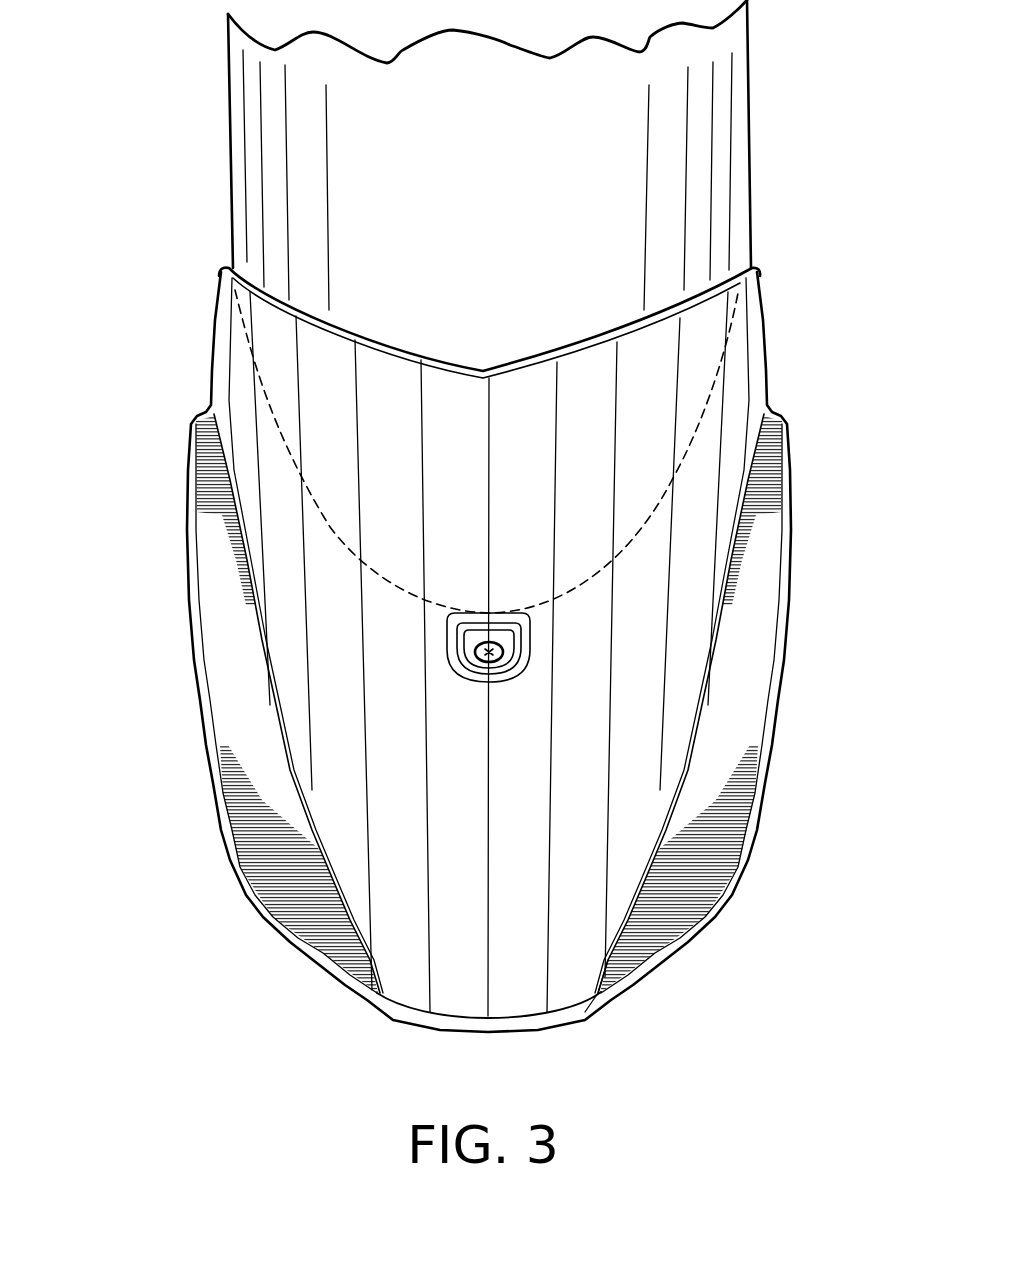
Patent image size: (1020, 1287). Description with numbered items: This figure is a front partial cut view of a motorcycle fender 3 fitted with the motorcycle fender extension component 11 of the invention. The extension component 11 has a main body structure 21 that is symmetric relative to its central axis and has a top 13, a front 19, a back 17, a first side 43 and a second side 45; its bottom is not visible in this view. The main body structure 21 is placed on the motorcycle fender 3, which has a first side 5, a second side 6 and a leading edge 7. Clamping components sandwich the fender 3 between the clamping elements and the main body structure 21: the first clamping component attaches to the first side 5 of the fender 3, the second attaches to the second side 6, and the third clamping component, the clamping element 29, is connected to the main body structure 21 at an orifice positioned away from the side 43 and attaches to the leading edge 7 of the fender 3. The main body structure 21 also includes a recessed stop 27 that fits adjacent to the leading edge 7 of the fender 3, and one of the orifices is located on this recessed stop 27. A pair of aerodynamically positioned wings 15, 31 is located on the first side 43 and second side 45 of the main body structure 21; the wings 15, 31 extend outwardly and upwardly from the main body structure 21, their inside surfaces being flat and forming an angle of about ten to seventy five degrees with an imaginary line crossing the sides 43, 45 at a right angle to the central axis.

The motorcycle fender 3 is at (165, 170).
The first side of the motorcycle fender 5 is at (748, 210).
The second side of the motorcycle fender 6 is at (228, 107).
The leading edge of the motorcycle fender 7 is at (474, 602).
The motorcycle fender extension component 11 is at (808, 607).
The top 13 is at (467, 877).
The wing 15 is at (740, 733).
The back 17 is at (623, 340).
The front 19 is at (420, 1027).
The main body structure 21 is at (582, 985).
The recessed stop 27 is at (457, 647).
The clamping element 29 is at (480, 660).
The wing 31 is at (227, 633).
The first side 43 is at (733, 600).
The second side 45 is at (235, 562).